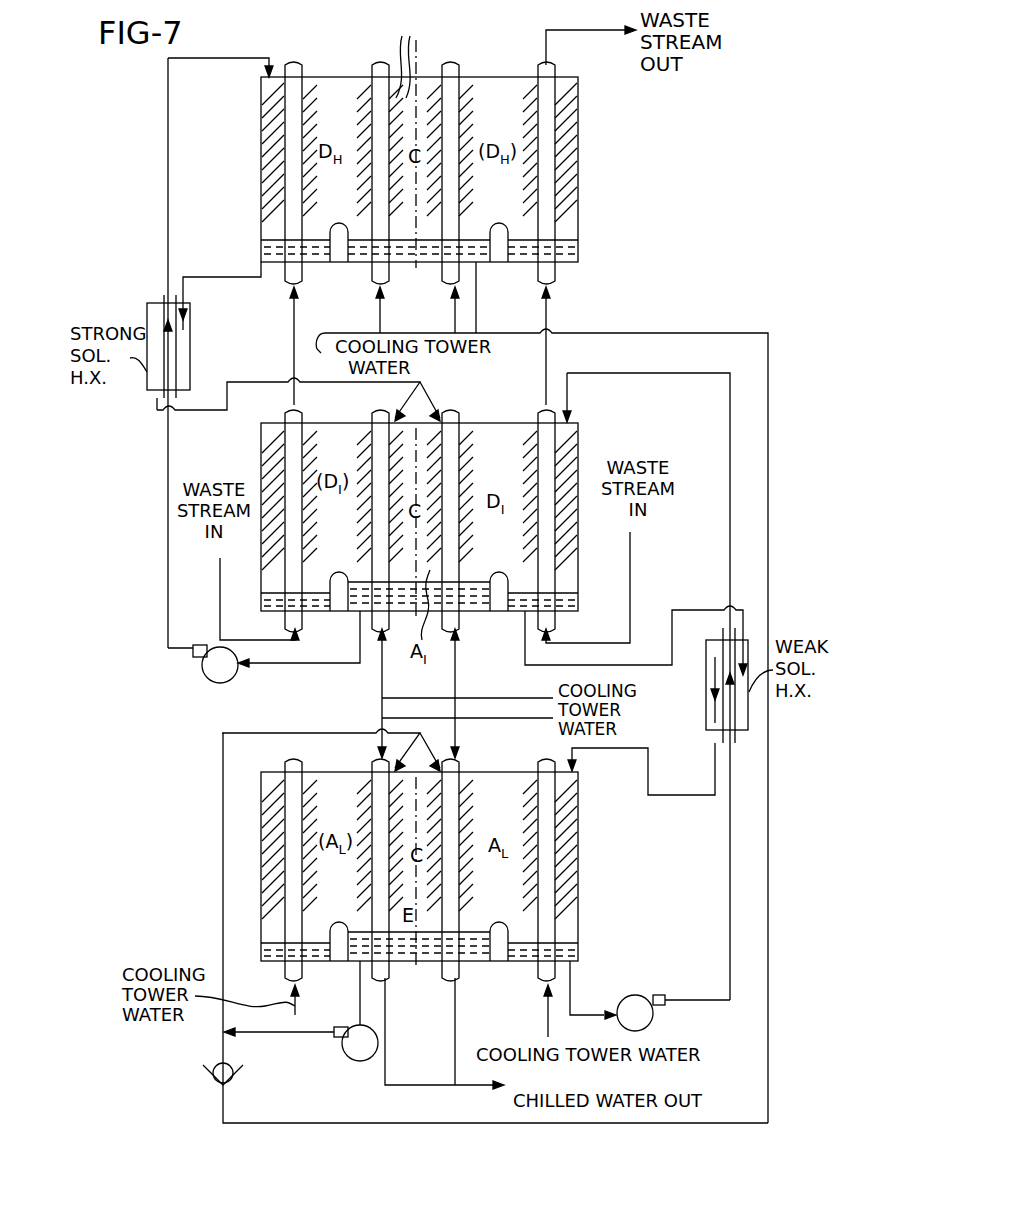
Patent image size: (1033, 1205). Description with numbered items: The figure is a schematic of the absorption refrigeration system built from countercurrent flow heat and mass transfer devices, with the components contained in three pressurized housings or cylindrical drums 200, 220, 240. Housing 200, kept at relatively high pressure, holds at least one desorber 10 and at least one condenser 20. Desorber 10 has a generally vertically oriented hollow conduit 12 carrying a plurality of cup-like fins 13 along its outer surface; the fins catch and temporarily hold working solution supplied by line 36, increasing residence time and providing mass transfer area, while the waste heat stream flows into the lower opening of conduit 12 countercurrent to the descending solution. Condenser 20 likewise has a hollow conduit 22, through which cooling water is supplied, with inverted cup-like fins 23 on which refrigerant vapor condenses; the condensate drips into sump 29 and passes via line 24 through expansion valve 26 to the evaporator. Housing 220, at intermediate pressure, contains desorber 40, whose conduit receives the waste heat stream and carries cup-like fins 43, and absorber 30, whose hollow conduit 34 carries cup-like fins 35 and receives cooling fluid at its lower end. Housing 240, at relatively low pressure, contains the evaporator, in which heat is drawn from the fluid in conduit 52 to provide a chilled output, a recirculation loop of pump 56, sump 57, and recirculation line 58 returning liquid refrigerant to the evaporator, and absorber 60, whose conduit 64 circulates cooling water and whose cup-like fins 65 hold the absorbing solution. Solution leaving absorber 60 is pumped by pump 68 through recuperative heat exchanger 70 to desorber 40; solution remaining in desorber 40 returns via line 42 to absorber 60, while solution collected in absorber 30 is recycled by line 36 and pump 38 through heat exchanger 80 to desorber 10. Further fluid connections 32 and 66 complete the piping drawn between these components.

The desorber 10 is at (310, 112).
The hollow conduit 12 is at (276, 238).
The cup-like fins 13 is at (278, 137).
The condenser 20 is at (368, 92).
The hollow conduit 22 is at (380, 58).
The cup-like fins 23 is at (410, 54).
The line 24 is at (770, 906).
The expansion valve 26 is at (208, 1063).
The sump 29 is at (366, 252).
The absorber 30 is at (470, 442).
The strong solution line 32 is at (238, 383).
The hollow conduit 34 is at (452, 626).
The cup-like fins 35 is at (454, 559).
The line 36 is at (168, 521).
The pump 38 is at (206, 682).
The desorber 40 is at (318, 441).
The line 42 is at (688, 606).
The cup-like fins 43 is at (562, 458).
The hollow conduit 52 is at (382, 978).
The pump 56 is at (364, 1060).
The sump 57 is at (340, 962).
The recirculation line 58 is at (298, 1033).
The absorber 60 is at (583, 799).
The hollow conduit 64 is at (290, 926).
The cup-like fins 65 is at (536, 820).
The solution return line 66 is at (702, 1000).
The pump 68 is at (632, 994).
The recuperative heat exchanger 70 is at (706, 682).
The heat exchanger 80 is at (190, 350).
The pressurized housing 200 is at (250, 210).
The pressurized housing 220 is at (250, 440).
The pressurized housing 240 is at (594, 860).